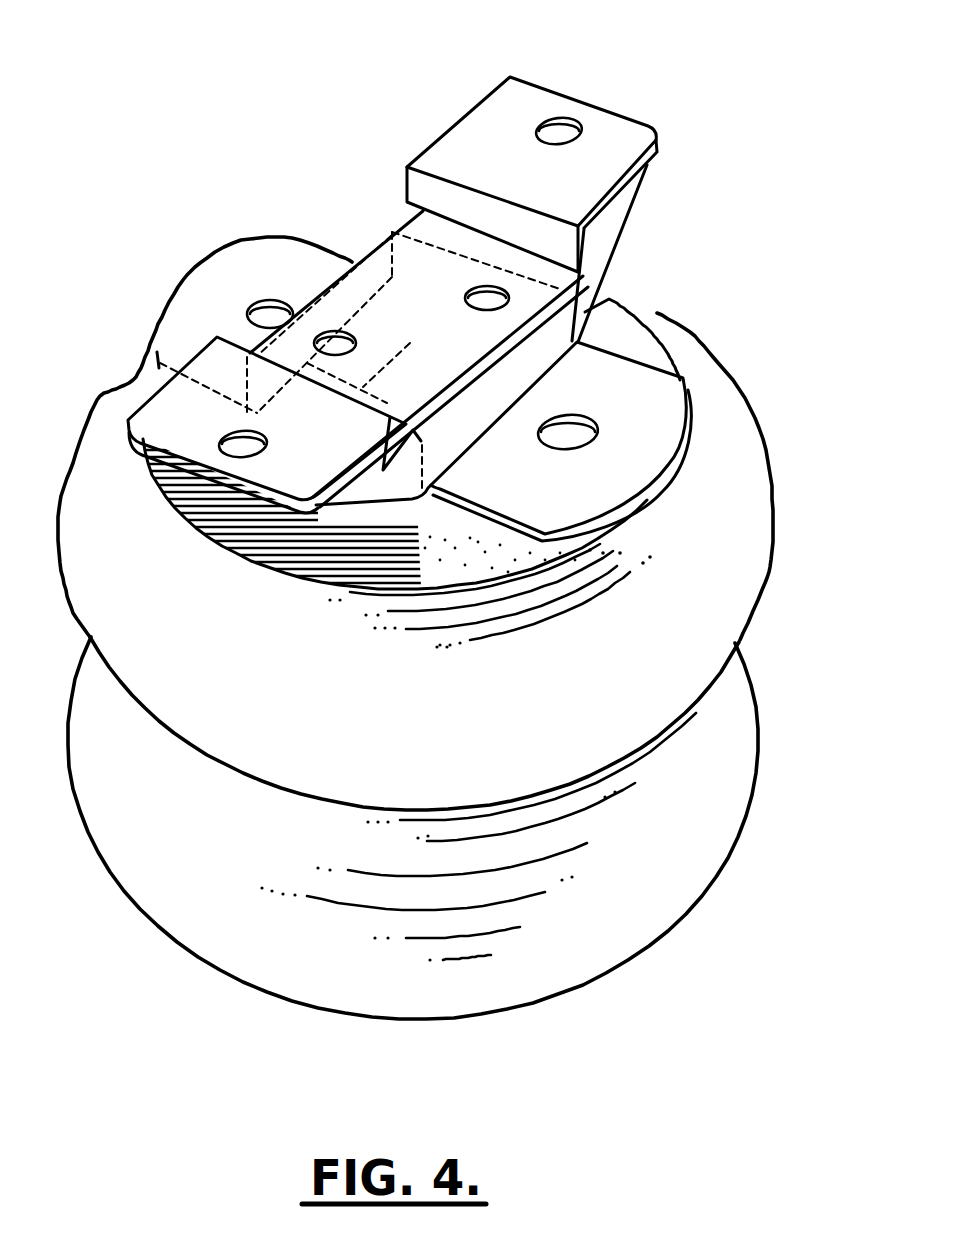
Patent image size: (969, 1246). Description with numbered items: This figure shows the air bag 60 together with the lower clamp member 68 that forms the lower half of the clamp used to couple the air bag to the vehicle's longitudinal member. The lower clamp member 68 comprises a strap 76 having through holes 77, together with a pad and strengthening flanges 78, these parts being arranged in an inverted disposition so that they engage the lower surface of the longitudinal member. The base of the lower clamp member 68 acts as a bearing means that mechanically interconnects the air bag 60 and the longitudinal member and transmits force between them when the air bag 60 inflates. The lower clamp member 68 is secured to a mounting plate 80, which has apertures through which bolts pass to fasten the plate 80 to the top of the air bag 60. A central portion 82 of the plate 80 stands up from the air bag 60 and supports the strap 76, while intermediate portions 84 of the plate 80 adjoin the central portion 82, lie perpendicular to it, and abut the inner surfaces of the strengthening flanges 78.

The air bag 60 is at (765, 587).
The lower clamp member 68 is at (428, 132).
The strap 76 is at (415, 220).
The through holes 77 is at (562, 132).
The strengthening flanges 78 is at (607, 261).
The mounting plate 80 is at (622, 352).
The central portion 82 is at (411, 320).
The intermediate portions 84 is at (428, 445).